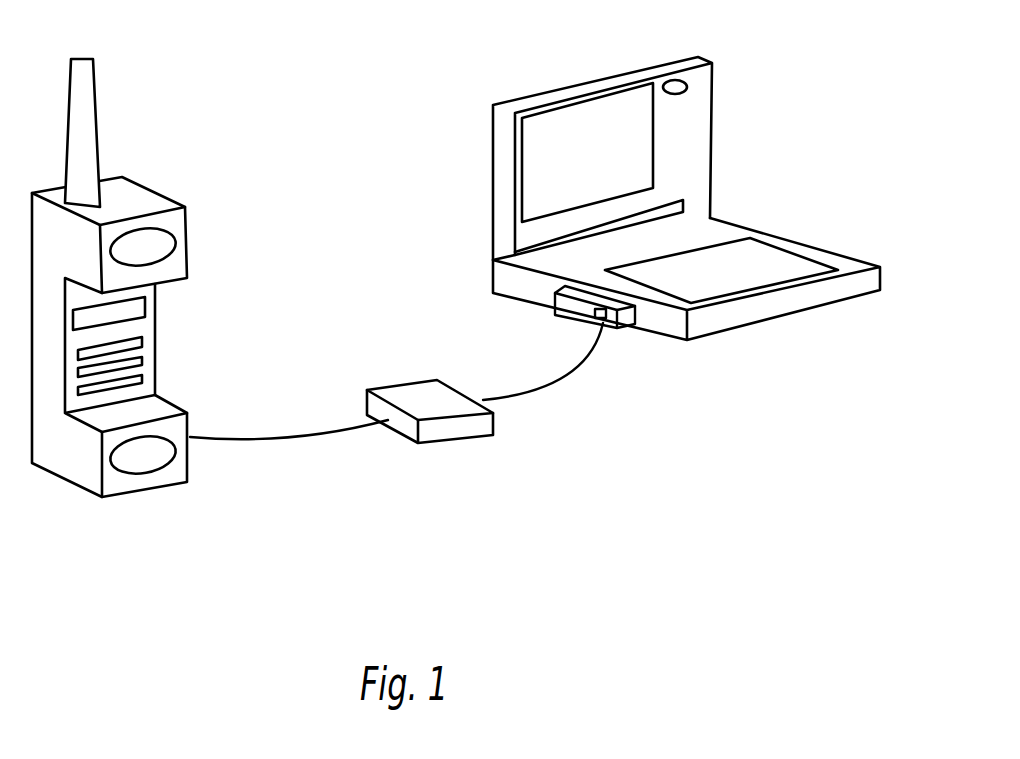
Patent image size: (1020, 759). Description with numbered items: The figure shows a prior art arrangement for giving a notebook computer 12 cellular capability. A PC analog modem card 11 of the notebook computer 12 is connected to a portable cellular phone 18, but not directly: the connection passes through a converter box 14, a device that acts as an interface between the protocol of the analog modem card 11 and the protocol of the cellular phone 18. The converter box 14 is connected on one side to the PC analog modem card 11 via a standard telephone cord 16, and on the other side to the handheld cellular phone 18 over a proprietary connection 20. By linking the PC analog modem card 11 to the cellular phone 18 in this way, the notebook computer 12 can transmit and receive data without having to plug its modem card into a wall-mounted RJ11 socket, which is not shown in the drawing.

The PC analog modem card 11 is at (557, 300).
The notebook computer 12 is at (678, 82).
The converter box 14 is at (423, 380).
The standard telephone cord 16 is at (555, 373).
The portable cellular phone 18 is at (185, 207).
The proprietary connection 20 is at (295, 433).